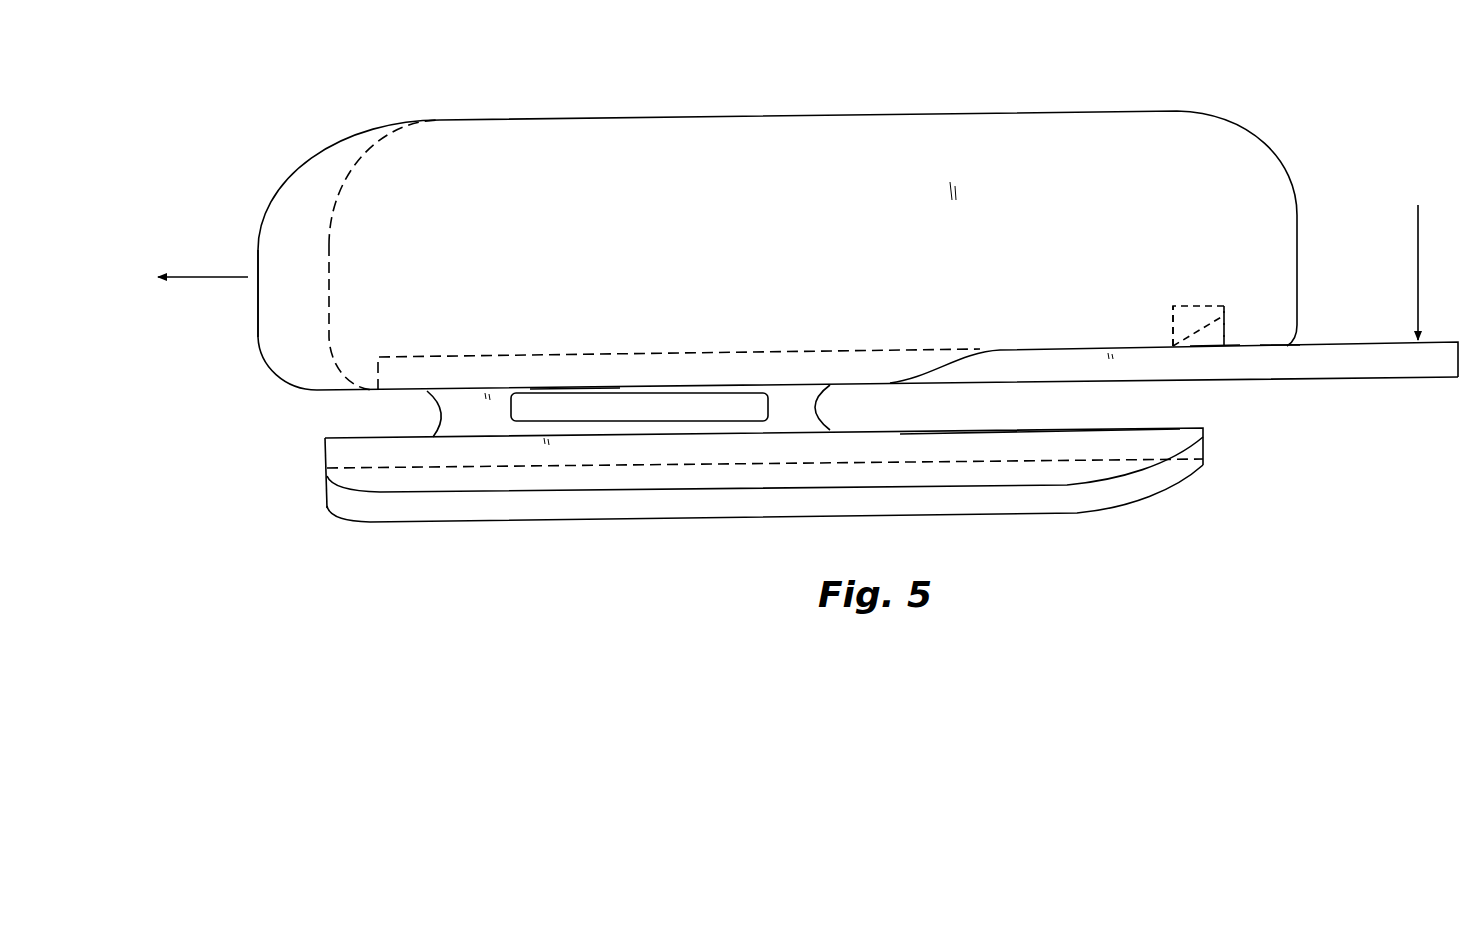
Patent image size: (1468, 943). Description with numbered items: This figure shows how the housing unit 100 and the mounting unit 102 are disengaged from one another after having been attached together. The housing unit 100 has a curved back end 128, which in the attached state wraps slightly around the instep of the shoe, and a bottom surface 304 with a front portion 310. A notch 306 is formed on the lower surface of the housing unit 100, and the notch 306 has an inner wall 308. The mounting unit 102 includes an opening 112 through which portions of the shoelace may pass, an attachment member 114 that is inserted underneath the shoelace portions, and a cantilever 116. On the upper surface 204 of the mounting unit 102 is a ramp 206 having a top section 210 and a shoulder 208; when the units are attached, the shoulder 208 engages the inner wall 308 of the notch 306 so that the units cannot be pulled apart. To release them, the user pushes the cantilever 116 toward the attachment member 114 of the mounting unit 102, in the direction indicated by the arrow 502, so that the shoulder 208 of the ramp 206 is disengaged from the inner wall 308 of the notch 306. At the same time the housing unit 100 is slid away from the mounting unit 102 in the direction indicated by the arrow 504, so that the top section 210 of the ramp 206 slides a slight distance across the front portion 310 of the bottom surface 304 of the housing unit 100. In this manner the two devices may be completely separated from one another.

The housing unit 100 is at (711, 115).
The back end 128 is at (257, 239).
The arrow 504 is at (222, 277).
The upper surface 204 is at (704, 352).
The bottom surface 304 is at (538, 363).
The opening 112 is at (593, 415).
The mounting unit 102 is at (1192, 410).
The attachment member 114 is at (1057, 429).
The cantilever 116 is at (1333, 346).
The notch 306 is at (1193, 306).
The inner wall 308 is at (1220, 316).
The top section of the ramp 210 is at (1194, 333).
The shoulder 208 is at (1225, 334).
The ramp 206 is at (1207, 346).
The front portion 310 is at (1280, 346).
The arrow 502 is at (1417, 270).